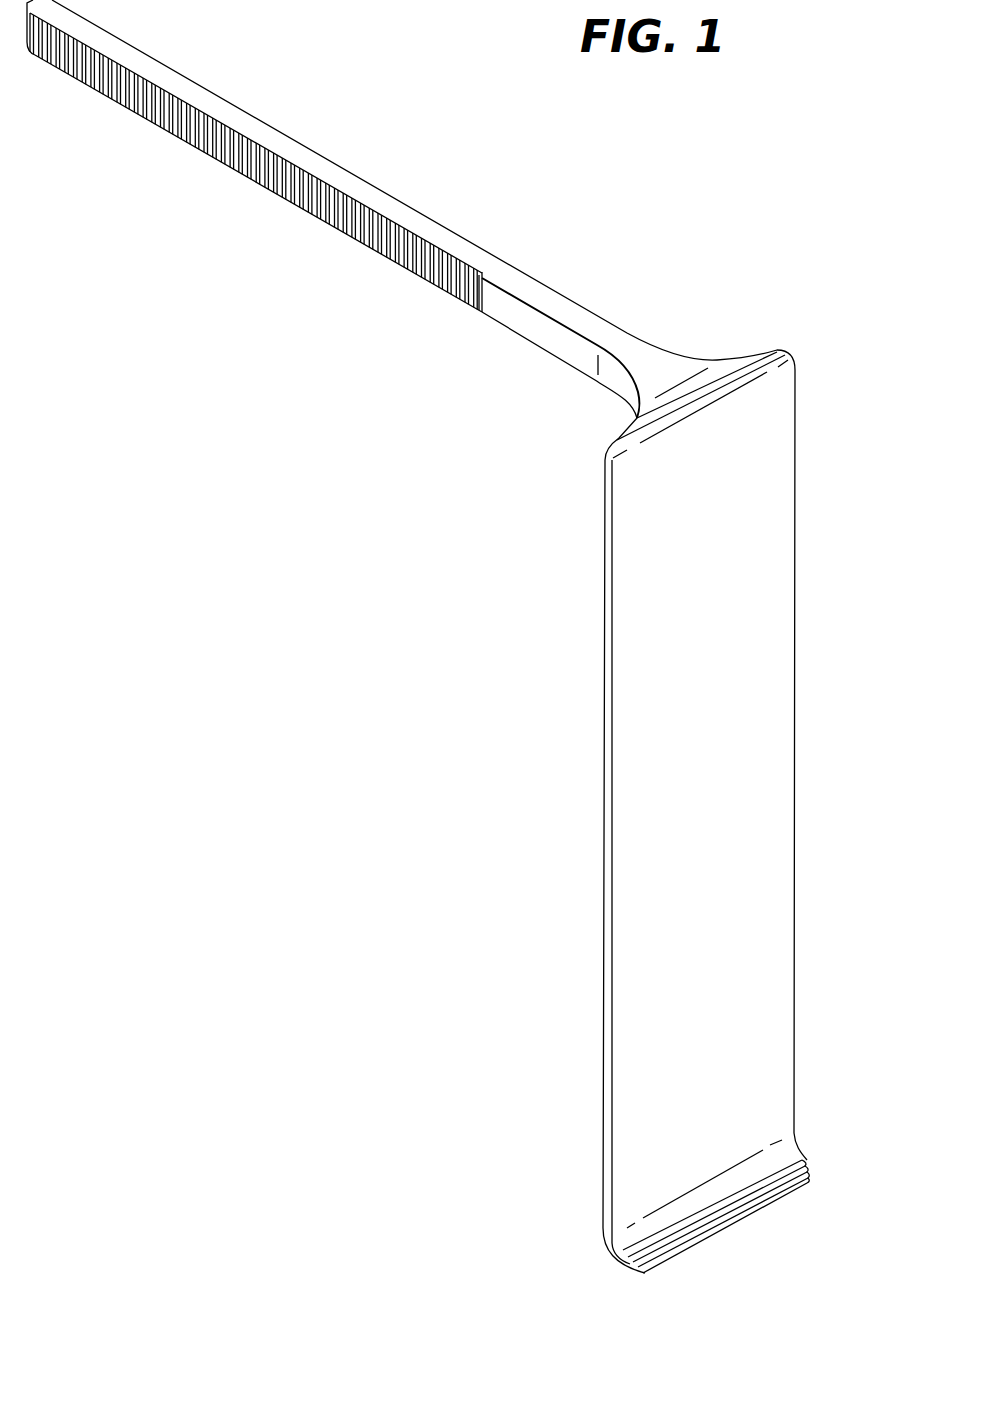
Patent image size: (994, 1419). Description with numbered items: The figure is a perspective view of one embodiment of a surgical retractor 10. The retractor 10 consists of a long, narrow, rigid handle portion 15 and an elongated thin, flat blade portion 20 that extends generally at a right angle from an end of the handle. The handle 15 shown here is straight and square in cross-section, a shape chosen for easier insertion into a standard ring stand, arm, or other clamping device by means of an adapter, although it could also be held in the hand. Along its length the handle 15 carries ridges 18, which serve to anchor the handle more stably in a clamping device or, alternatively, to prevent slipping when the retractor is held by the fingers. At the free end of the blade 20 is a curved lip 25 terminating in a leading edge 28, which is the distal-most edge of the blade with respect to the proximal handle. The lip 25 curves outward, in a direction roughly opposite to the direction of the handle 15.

The retractor 10 is at (767, 332).
The handle portion 15 is at (288, 148).
The ridges 18 is at (300, 207).
The blade portion 20 is at (763, 623).
The curved lip 25 is at (800, 1160).
The leading edge 28 is at (720, 1228).